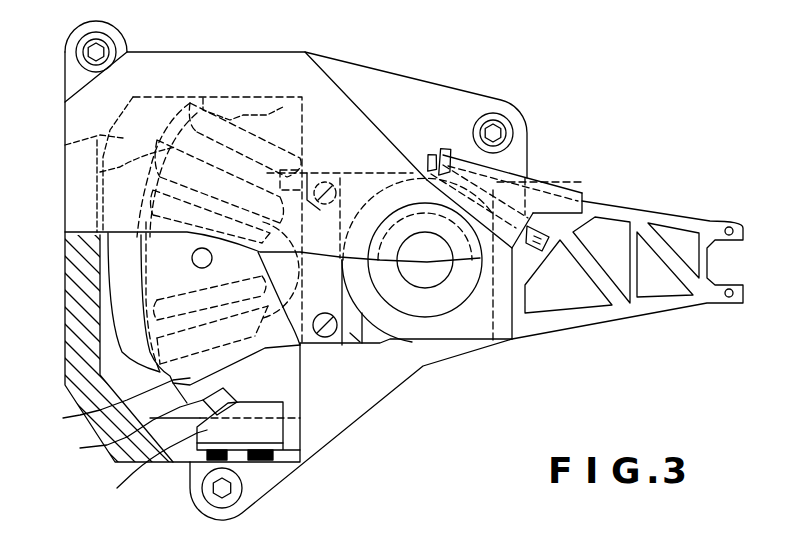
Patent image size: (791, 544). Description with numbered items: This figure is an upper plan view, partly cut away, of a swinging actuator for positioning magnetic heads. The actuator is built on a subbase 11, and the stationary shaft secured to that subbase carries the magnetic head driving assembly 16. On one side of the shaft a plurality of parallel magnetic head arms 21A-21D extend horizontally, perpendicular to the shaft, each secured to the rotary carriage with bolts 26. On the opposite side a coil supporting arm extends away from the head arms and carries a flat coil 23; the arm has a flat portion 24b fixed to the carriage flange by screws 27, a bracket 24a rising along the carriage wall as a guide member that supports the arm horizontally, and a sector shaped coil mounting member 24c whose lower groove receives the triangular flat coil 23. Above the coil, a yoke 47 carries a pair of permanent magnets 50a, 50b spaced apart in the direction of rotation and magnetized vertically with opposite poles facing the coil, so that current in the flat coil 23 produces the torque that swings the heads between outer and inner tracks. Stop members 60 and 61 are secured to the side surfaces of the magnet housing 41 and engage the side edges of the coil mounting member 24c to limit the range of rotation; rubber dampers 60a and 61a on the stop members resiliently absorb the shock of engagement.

The subbase 11 is at (365, 82).
The magnetic head driving assembly 16 is at (380, 185).
The bolts 26 is at (497, 180).
The magnetic head arms 21A-21D is at (637, 215).
The flat coil 23 is at (113, 262).
The magnet housing 41 is at (72, 345).
The yoke 47 is at (65, 145).
The permanent magnet 50b is at (272, 95).
The stop member 61 is at (250, 100).
The damper 61a is at (220, 100).
The screws 27 is at (325, 181).
The bracket 24a is at (353, 345).
The flat portion 24b is at (296, 300).
The coil mounting member 24c is at (70, 418).
The permanent magnet 50a is at (88, 447).
The stop member 60 is at (200, 432).
The damper 60a is at (117, 488).